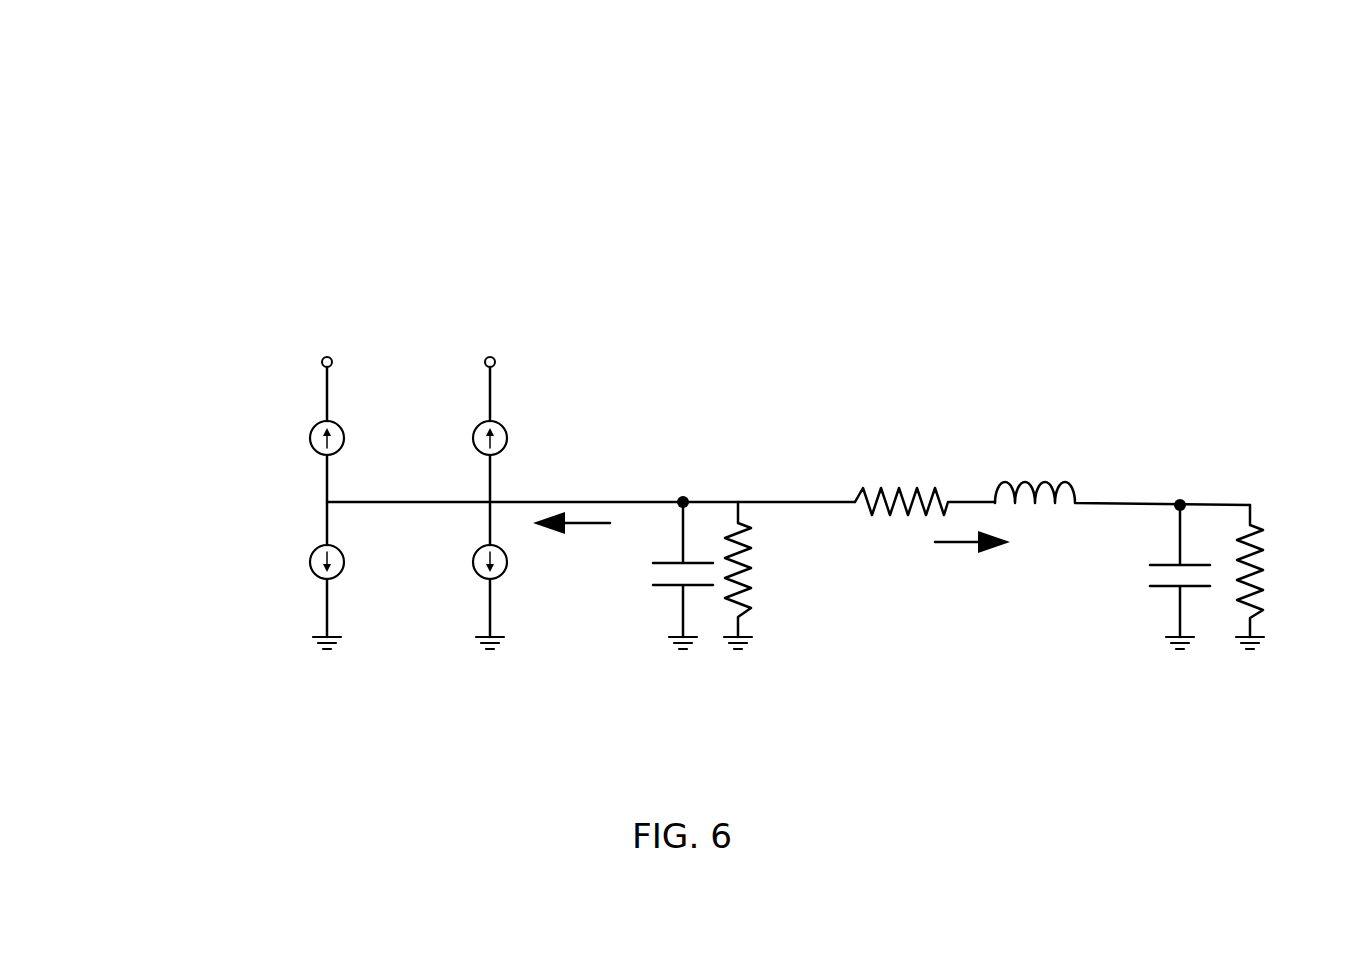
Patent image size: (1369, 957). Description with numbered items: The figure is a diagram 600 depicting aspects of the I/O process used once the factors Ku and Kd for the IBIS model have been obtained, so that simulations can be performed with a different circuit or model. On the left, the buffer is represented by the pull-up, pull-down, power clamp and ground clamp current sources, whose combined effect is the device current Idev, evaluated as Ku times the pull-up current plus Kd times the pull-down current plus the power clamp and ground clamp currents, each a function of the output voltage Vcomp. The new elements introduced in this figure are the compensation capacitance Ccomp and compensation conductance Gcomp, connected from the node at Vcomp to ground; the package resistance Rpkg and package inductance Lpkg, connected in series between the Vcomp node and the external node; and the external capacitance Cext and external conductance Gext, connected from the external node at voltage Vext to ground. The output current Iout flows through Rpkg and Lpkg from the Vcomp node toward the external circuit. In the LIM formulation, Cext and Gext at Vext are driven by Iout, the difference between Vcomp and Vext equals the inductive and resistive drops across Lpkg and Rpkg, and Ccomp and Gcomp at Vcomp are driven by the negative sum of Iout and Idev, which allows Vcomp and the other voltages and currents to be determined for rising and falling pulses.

The I/O process diagram 600 is at (172, 122).
The device current Idev is at (600, 529).
The DC voltage at the output Vcomp is at (702, 475).
The compensation capacitance Ccomp is at (633, 575).
The compensation conductance Gcomp is at (793, 575).
The package resistance Rpkg is at (925, 476).
The package inductance Lpkg is at (1122, 471).
The output current Iout is at (972, 566).
The external voltage Vext is at (1176, 482).
The external capacitance Cext is at (1149, 577).
The external conductance Gext is at (1287, 577).